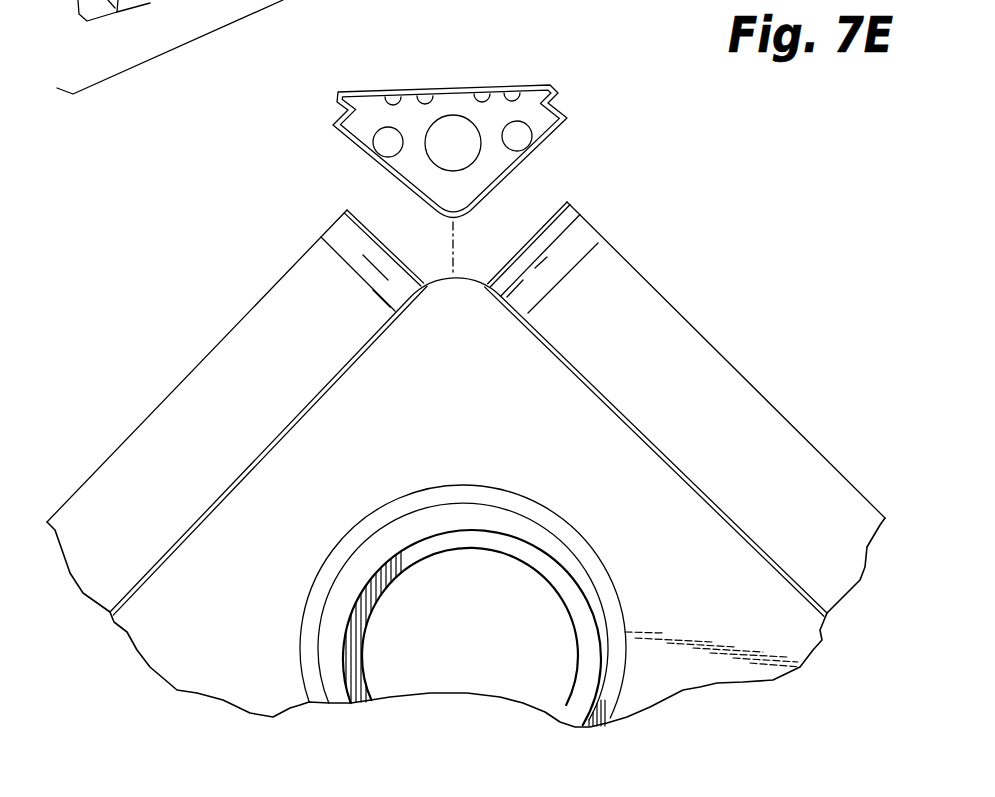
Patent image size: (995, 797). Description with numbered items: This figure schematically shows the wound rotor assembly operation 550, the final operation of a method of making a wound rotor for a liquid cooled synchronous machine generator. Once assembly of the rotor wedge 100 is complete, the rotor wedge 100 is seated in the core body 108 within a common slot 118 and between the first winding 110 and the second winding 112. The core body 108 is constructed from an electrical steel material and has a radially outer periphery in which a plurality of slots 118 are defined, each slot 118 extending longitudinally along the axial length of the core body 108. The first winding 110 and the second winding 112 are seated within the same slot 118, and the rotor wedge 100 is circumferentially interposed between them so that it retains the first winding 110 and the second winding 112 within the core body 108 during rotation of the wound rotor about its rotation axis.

The rotor wedge 100 is at (587, 98).
The core body 108 is at (473, 412).
The first winding 110 is at (263, 297).
The second winding 112 is at (637, 270).
The slot 118 is at (520, 208).
The wound rotor assembly operation 550 is at (801, 141).